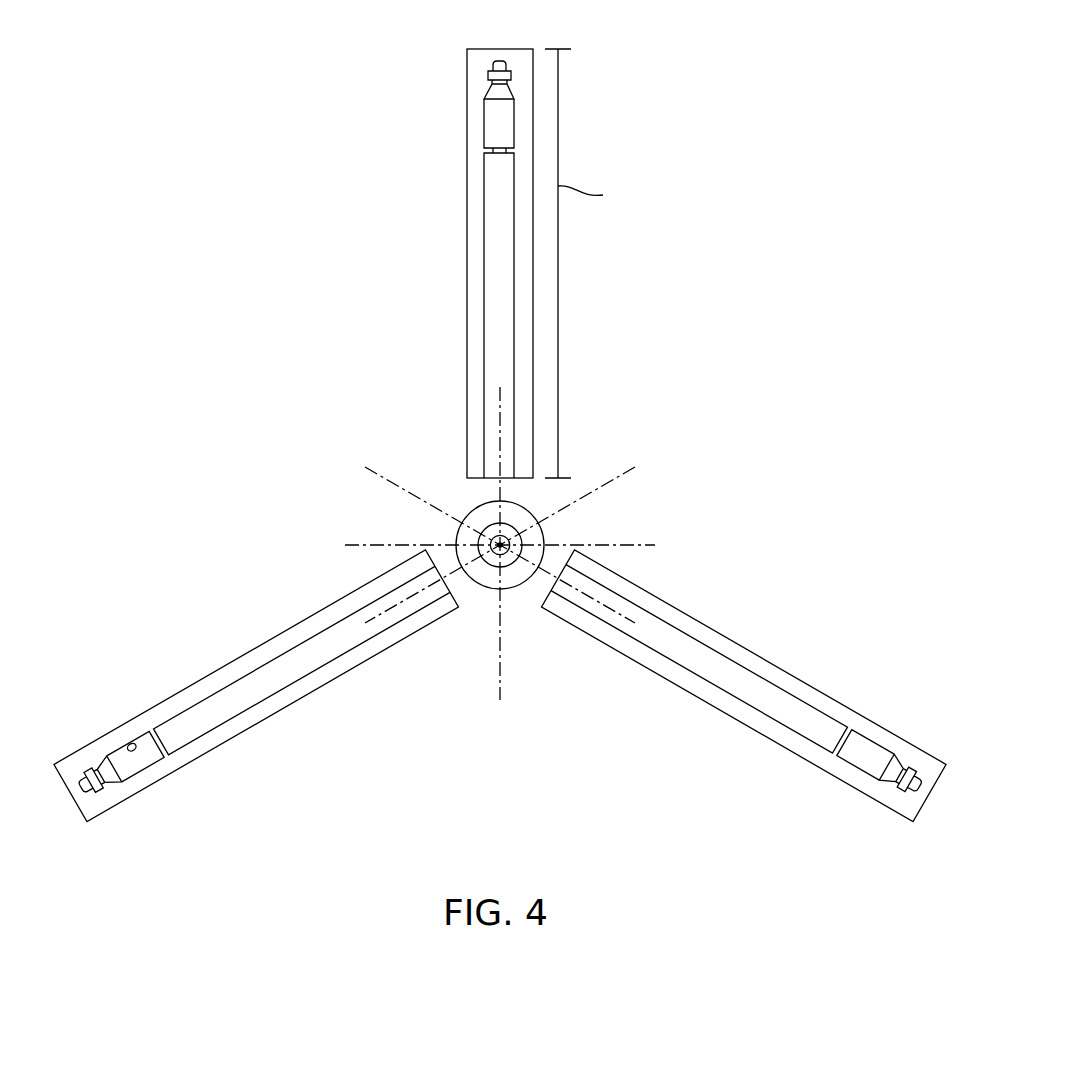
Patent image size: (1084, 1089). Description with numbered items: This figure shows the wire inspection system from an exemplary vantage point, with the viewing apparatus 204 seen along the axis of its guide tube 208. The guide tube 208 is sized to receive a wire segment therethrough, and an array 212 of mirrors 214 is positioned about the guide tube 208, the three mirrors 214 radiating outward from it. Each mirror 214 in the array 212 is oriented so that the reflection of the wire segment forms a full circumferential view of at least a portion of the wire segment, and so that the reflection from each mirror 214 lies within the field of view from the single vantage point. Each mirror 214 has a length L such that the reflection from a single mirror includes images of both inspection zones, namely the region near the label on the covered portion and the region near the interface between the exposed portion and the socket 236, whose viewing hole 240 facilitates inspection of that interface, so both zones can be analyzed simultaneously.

The viewing apparatus 204 is at (500, 435).
The guide tube 208 is at (572, 511).
The array 212 is at (421, 111).
The mirror 214 is at (500, 435).
The socket 236 is at (525, 535).
The viewing hole 240 is at (132, 744).